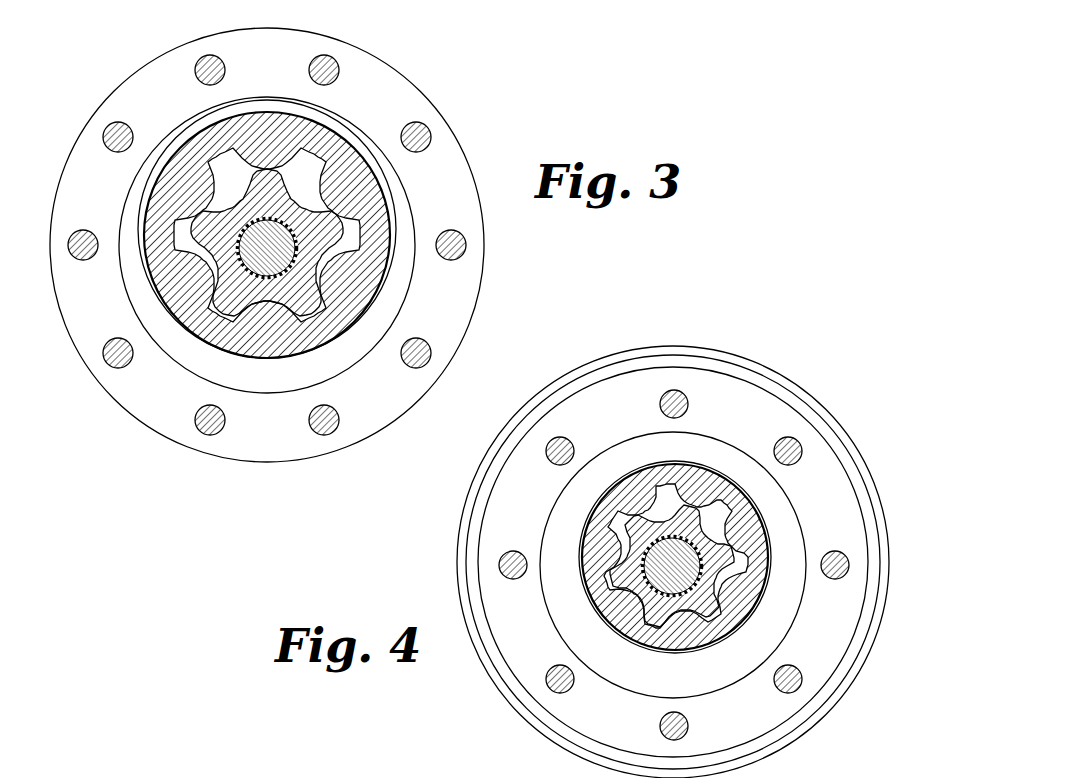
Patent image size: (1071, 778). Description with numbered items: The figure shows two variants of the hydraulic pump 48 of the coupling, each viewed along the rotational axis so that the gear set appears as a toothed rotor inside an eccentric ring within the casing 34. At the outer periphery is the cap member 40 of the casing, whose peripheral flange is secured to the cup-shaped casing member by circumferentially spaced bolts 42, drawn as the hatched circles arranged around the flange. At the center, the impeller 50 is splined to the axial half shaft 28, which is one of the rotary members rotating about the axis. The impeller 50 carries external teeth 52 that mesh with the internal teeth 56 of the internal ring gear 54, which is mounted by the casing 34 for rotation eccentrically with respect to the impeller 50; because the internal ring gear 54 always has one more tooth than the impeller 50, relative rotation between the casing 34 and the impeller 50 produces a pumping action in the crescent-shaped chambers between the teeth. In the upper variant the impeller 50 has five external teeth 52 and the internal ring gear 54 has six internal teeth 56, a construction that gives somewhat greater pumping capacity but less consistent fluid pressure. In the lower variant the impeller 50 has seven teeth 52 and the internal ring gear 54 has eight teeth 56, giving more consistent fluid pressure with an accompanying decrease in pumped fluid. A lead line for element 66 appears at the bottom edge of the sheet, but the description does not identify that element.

In FIG. 3, the axial half shaft 28 is at (325, 347).
In FIG. 4, the axial half shaft 28 is at (630, 595).
In FIG. 3, the casing 34 is at (455, 152).
In FIG. 3, the cap member 40 is at (442, 338).
In FIG. 4, the cap member 40 is at (825, 655).
In FIG. 3, the bolts 42 is at (111, 124).
In FIG. 4, the bolts 42 is at (559, 437).
In FIG. 3, the hydraulic pump 48 is at (378, 282).
In FIG. 4, the hydraulic pump 48 is at (765, 541).
In FIG. 3, the impeller 50 is at (288, 216).
In FIG. 4, the impeller 50 is at (702, 512).
In FIG. 3, the external teeth 52 is at (303, 157).
In FIG. 4, the external teeth 52 is at (673, 495).
In FIG. 3, the internal ring gear 54 is at (267, 117).
In FIG. 4, the internal ring gear 54 is at (620, 487).
In FIG. 3, the internal teeth 56 is at (197, 132).
In FIG. 4, the internal teeth 56 is at (607, 532).
In FIG. 4, the fluid passage 66 is at (318, 777).